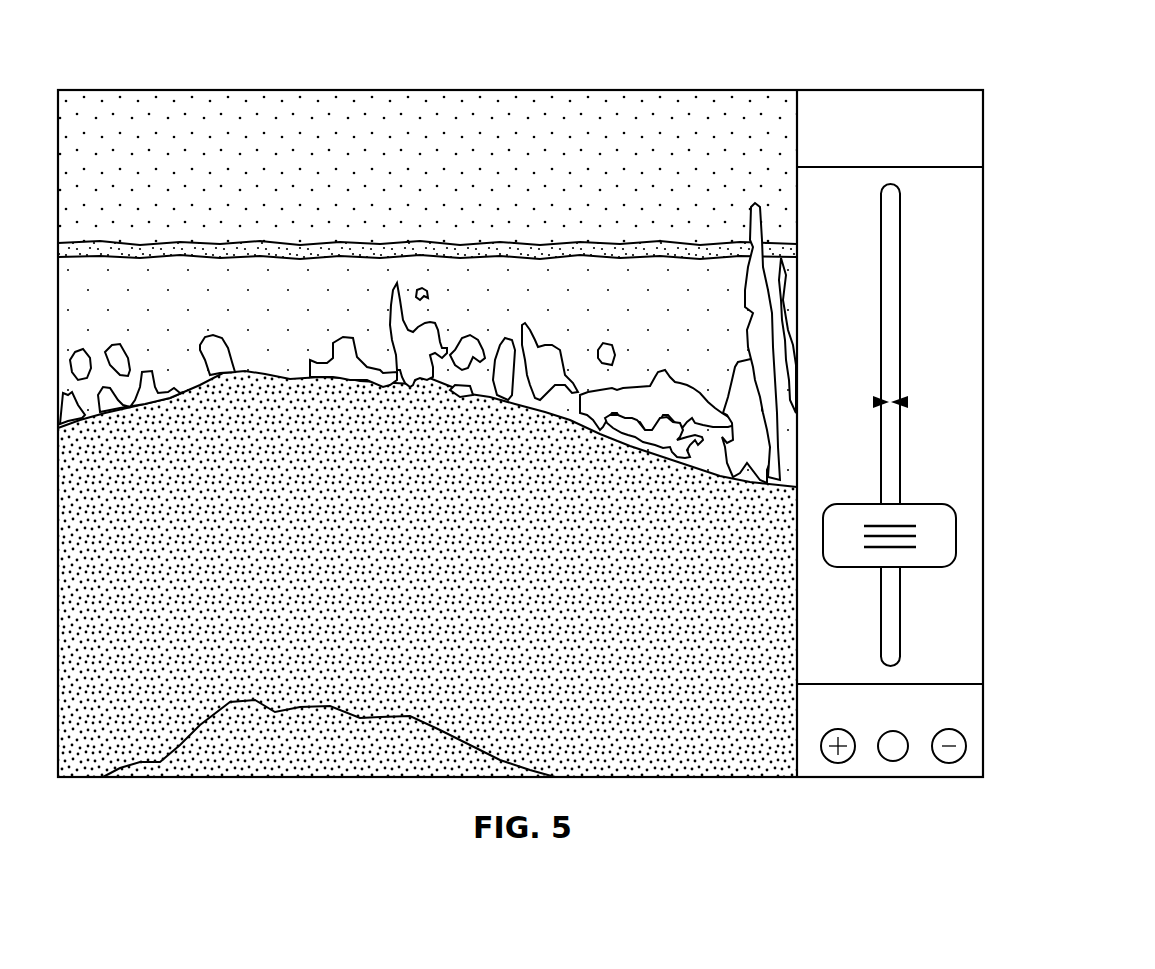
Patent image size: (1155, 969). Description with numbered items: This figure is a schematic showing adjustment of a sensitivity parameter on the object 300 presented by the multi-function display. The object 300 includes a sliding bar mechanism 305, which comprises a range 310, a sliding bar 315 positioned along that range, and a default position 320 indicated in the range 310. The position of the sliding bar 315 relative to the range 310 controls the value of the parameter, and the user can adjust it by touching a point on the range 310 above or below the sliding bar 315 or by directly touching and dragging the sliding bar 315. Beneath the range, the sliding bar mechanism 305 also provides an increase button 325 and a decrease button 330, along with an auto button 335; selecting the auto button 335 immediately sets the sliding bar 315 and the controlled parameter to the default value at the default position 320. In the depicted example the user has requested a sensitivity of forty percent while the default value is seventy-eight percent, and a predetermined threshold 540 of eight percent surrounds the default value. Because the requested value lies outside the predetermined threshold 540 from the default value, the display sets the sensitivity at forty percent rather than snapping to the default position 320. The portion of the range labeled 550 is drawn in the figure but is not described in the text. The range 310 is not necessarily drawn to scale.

The object 300 is at (779, 54).
The sliding bar mechanism 305 is at (936, 291).
The range 310 is at (975, 425).
The sliding bar 315 is at (935, 535).
The default position 320 is at (896, 397).
The increase button 325 is at (838, 764).
The decrease button 330 is at (949, 764).
The auto button 335 is at (893, 762).
The predetermined threshold 540 is at (890, 565).
The upper slider track portion 550 is at (900, 450).